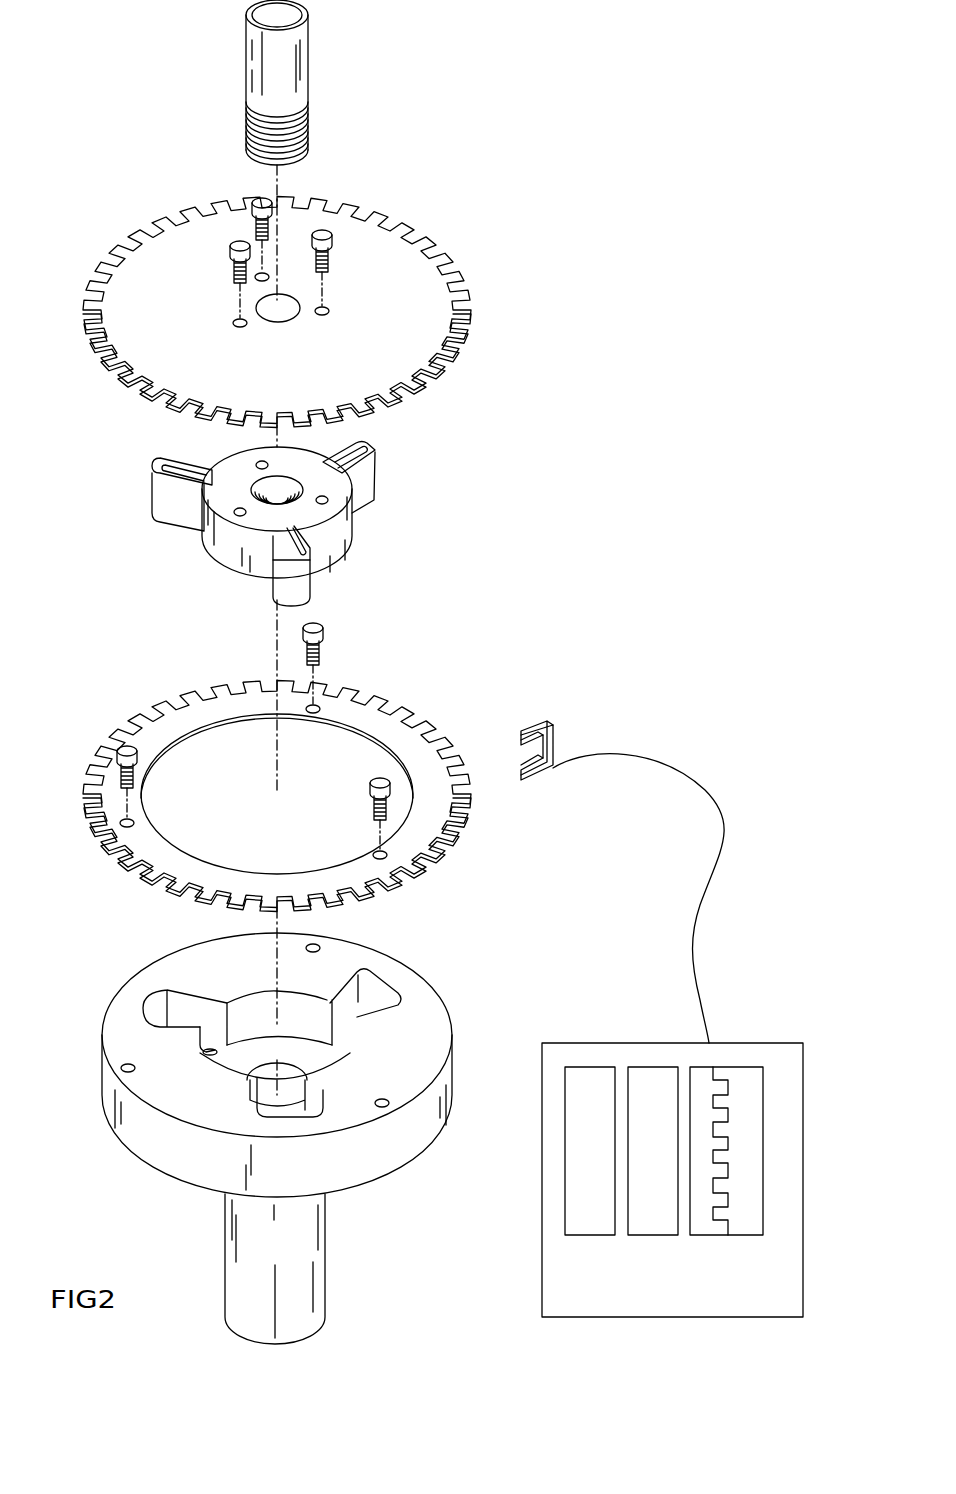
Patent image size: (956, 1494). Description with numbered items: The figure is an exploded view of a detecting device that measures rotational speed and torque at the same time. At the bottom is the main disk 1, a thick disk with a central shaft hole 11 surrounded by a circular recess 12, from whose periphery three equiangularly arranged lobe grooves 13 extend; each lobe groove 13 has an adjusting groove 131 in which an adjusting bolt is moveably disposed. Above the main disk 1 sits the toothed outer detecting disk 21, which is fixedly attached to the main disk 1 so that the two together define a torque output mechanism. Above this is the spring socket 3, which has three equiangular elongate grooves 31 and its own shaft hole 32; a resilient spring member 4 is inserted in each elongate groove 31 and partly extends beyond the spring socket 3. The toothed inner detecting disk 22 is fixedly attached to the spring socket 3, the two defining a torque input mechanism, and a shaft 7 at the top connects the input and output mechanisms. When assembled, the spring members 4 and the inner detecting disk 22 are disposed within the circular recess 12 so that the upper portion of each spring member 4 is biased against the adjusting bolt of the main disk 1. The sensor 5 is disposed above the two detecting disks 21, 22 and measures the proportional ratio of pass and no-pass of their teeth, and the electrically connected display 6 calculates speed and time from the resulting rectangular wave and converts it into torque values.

The main disk 1 is at (273, 1133).
The shaft hole 11 is at (283, 1080).
The circular recess 12 is at (325, 1058).
The lobe grooves 13 is at (370, 998).
The adjusting groove 131 is at (205, 1057).
The outer detecting disk 21 is at (413, 838).
The inner detecting disk 22 is at (428, 315).
The spring socket 3 is at (263, 545).
The elongate grooves 31 is at (200, 495).
The shaft hole 32 is at (267, 507).
The spring member 4 is at (158, 490).
The sensor 5 is at (548, 725).
The display 6 is at (787, 1193).
The shaft 7 is at (300, 72).